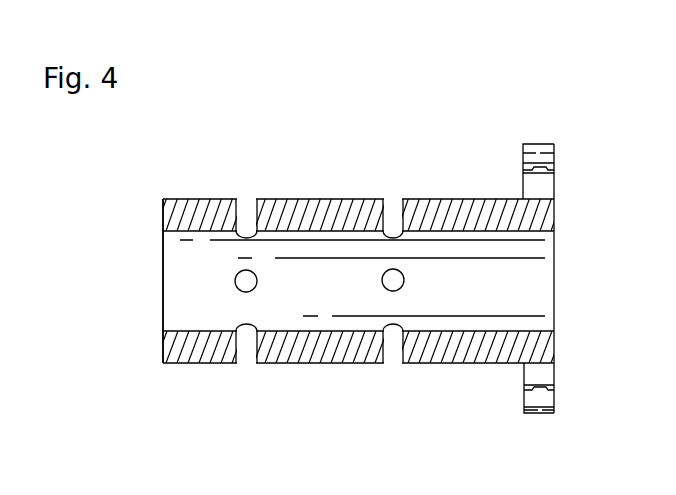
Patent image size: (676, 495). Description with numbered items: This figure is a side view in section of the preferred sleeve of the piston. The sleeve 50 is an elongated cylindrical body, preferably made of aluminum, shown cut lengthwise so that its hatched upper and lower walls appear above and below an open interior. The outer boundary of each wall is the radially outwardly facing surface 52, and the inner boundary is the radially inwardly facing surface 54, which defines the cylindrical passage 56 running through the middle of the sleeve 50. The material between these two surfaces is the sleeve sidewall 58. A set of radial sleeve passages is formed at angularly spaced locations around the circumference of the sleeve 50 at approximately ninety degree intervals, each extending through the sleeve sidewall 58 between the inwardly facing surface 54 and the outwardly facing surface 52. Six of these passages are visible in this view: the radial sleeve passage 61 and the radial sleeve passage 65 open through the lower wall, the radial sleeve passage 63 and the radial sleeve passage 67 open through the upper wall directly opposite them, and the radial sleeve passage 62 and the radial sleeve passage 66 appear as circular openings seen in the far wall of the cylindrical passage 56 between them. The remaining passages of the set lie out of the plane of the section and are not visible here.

The sleeve 50 is at (168, 388).
The radially outwardly facing surface 52 is at (204, 199).
The radially inwardly facing surface 54 is at (334, 229).
The cylindrical passage 56 is at (309, 294).
The sleeve sidewall 58 is at (167, 210).
The radial sleeve passage 61 is at (247, 347).
The radial sleeve passage 62 is at (250, 279).
The radial sleeve passage 63 is at (243, 201).
The radial sleeve passage 65 is at (393, 347).
The radial sleeve passage 66 is at (399, 276).
The radial sleeve passage 67 is at (393, 203).